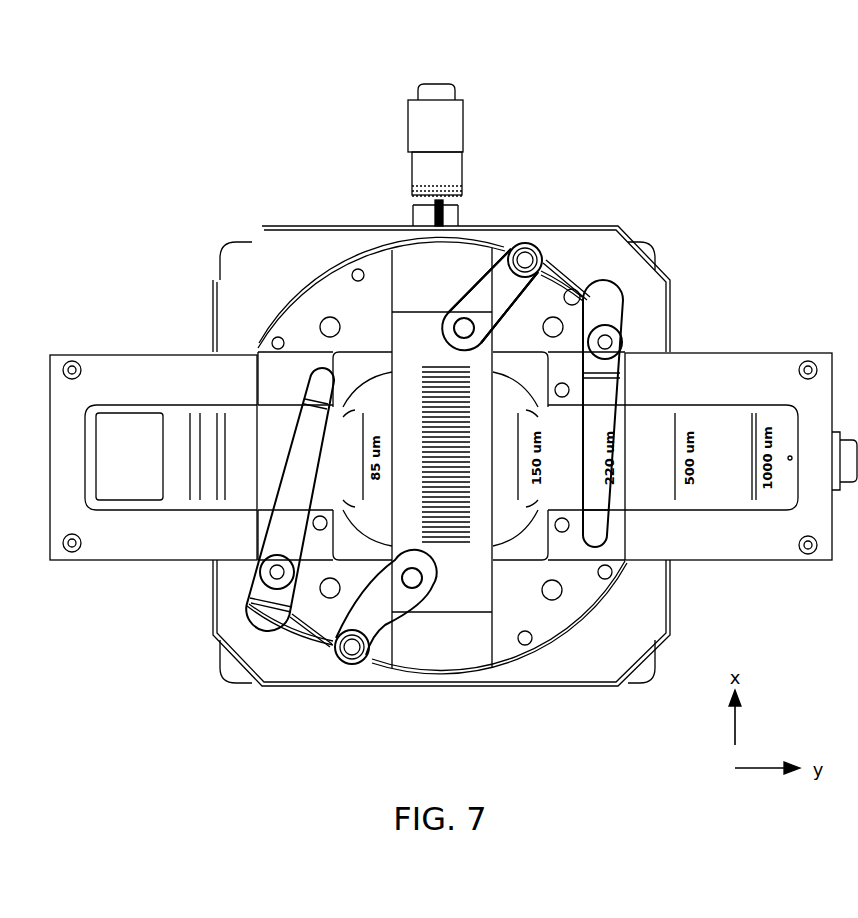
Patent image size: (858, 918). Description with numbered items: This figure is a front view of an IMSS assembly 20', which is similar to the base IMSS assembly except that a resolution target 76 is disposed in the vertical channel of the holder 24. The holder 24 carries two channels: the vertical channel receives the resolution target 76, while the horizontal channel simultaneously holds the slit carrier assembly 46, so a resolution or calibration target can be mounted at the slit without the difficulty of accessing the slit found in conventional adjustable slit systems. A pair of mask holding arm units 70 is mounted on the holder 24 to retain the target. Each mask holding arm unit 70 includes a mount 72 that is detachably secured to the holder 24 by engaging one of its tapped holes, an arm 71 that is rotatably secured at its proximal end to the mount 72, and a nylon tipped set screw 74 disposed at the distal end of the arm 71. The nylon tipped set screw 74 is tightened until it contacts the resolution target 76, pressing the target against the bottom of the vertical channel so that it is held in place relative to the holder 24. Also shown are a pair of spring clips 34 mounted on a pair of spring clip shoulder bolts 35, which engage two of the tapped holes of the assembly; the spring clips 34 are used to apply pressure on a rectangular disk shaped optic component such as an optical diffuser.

The IMSS assembly 20' is at (165, 52).
The slit carrier assembly 46 is at (106, 354).
The mask holding arm unit 70 is at (473, 172).
The arm 71 is at (506, 300).
The mount 72 is at (525, 262).
The nylon tipped set screw 74 is at (464, 317).
The holder 24 is at (551, 290).
The spring clip shoulder bolt 35 is at (614, 322).
The spring clip 34 is at (276, 626).
The resolution target 76 is at (467, 592).